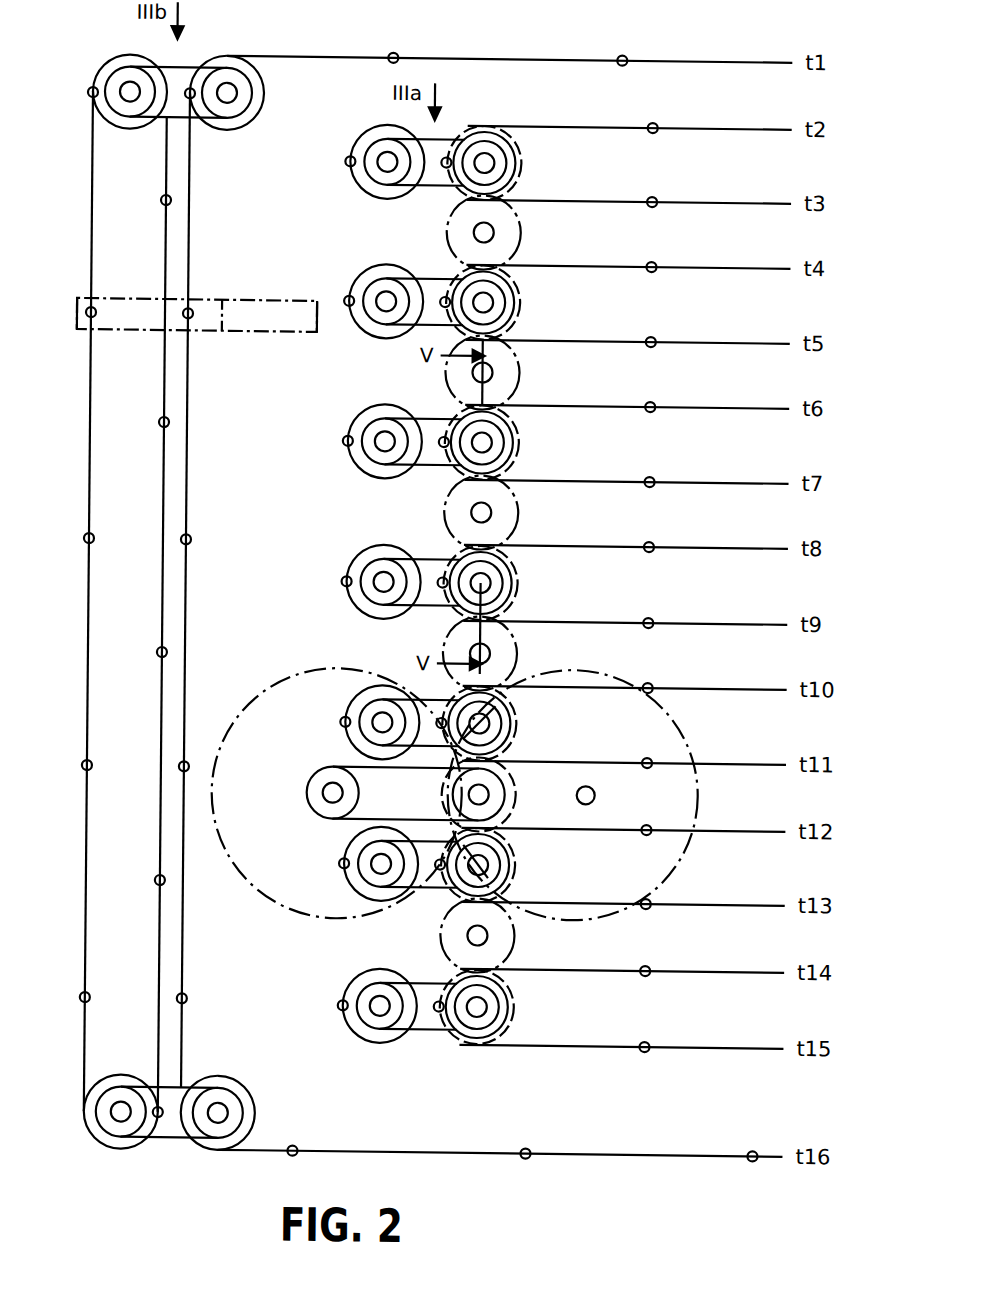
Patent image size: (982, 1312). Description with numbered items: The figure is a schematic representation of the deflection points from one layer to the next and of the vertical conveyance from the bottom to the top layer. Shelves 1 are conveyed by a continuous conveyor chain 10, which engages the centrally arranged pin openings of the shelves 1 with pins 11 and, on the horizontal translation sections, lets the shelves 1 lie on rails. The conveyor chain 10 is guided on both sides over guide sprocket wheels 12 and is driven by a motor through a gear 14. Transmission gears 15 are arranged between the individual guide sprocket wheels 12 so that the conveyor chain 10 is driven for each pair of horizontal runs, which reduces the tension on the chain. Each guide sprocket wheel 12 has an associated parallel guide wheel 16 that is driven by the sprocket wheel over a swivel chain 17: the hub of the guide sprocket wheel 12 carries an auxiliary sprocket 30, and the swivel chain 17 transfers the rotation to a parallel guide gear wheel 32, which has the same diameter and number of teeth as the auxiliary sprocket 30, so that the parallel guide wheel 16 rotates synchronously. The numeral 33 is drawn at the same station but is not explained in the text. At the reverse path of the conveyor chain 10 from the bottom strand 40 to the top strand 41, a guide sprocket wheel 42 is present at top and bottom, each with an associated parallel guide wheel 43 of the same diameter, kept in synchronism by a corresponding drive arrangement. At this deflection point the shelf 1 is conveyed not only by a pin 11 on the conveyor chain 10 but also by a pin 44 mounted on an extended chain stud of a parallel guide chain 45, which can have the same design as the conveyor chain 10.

The shelf 1 is at (139, 294).
The conveyor chain 10 is at (188, 422).
The pin 11 is at (398, 53).
The guide sprocket wheel 12 is at (517, 437).
The gear 14 is at (606, 794).
The transmission gear 15 is at (516, 366).
The parallel guide wheel 16 is at (352, 422).
The swivel chain 17 is at (433, 419).
The auxiliary sprocket 30 is at (505, 422).
The parallel guide gear wheel 32 is at (380, 427).
The roller pin 33 is at (341, 443).
The bottom strand 40 is at (412, 1155).
The top strand 41 is at (272, 58).
The guide sprocket wheel 42 is at (256, 1098).
The parallel guide wheel 43 is at (104, 66).
The pin 44 is at (157, 199).
The parallel guide chain 45 is at (86, 380).